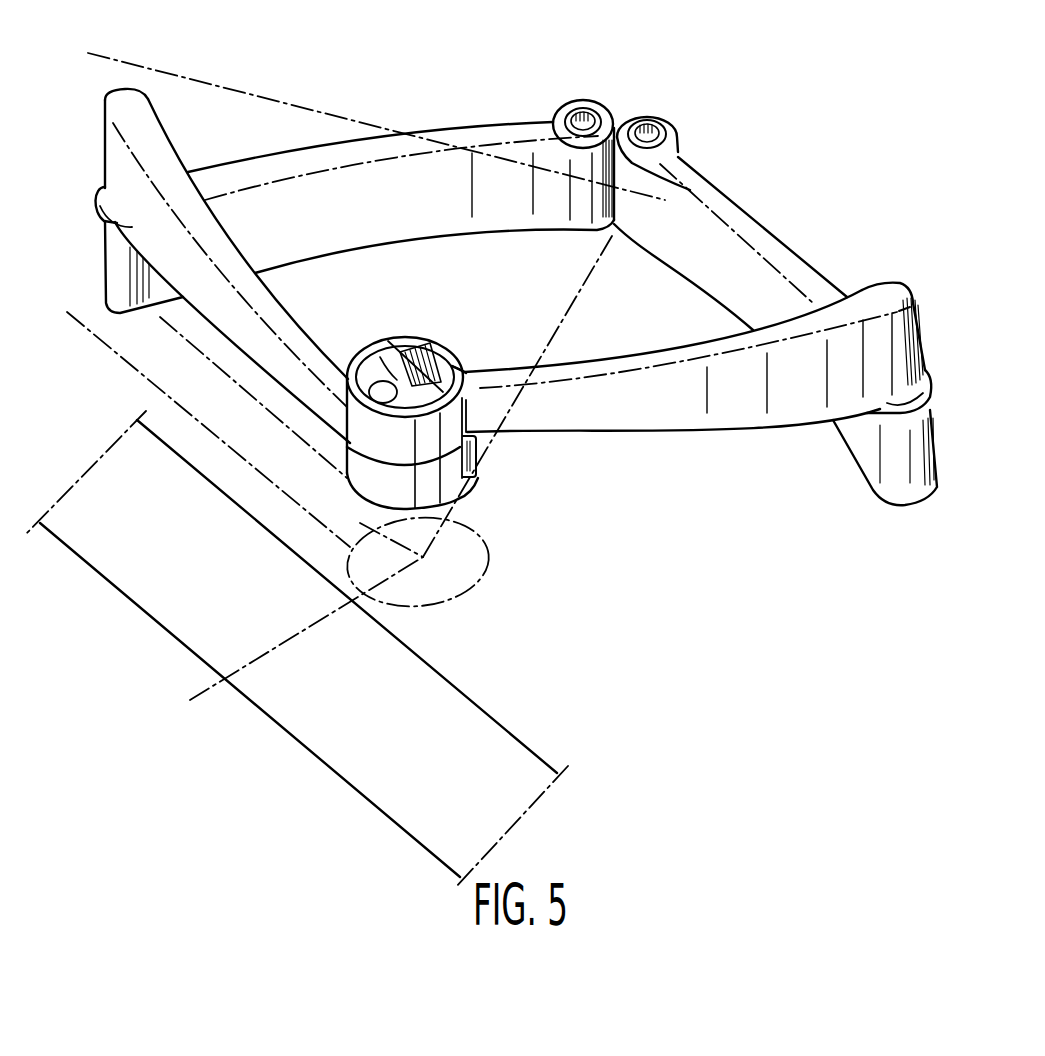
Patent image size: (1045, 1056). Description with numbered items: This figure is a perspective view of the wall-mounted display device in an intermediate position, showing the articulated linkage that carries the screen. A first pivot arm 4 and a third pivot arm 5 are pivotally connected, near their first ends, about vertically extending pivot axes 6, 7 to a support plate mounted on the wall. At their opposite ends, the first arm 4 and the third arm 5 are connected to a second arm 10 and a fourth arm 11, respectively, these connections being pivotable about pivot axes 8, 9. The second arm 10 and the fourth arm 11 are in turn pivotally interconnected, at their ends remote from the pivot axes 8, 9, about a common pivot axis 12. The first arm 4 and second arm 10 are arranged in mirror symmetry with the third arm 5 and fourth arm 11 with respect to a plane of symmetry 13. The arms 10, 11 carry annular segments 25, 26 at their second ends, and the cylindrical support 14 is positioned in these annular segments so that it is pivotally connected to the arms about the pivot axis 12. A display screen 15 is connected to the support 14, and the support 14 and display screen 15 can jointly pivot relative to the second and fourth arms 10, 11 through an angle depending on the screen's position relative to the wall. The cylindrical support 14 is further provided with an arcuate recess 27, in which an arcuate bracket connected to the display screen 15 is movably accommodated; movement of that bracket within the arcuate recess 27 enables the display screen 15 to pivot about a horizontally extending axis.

The first pivot arm 4 is at (435, 134).
The third pivot arm 5 is at (727, 197).
The pivot axis 6 is at (585, 110).
The pivot axis 7 is at (650, 120).
The pivot axis 8 is at (125, 98).
The pivot axis 9 is at (900, 283).
The second arm 10 is at (273, 313).
The fourth arm 11 is at (708, 410).
The common pivot axis 12 is at (423, 557).
The plane of symmetry 13 is at (547, 348).
The support 14 is at (372, 360).
The display screen 15 is at (373, 780).
The annular segment 25 is at (473, 473).
The annular segment 26 is at (463, 357).
The arcuate recess 27 is at (410, 350).